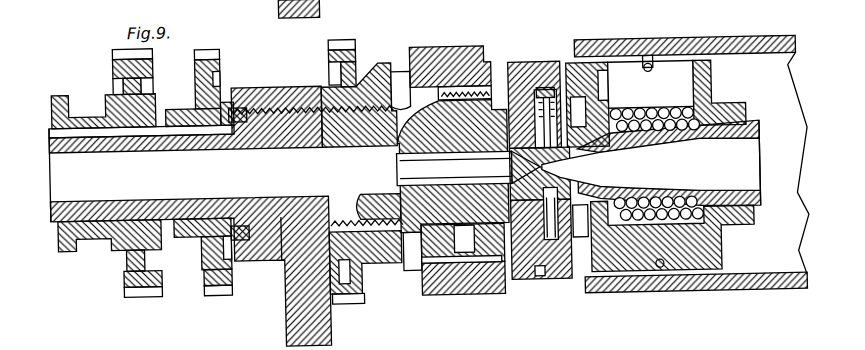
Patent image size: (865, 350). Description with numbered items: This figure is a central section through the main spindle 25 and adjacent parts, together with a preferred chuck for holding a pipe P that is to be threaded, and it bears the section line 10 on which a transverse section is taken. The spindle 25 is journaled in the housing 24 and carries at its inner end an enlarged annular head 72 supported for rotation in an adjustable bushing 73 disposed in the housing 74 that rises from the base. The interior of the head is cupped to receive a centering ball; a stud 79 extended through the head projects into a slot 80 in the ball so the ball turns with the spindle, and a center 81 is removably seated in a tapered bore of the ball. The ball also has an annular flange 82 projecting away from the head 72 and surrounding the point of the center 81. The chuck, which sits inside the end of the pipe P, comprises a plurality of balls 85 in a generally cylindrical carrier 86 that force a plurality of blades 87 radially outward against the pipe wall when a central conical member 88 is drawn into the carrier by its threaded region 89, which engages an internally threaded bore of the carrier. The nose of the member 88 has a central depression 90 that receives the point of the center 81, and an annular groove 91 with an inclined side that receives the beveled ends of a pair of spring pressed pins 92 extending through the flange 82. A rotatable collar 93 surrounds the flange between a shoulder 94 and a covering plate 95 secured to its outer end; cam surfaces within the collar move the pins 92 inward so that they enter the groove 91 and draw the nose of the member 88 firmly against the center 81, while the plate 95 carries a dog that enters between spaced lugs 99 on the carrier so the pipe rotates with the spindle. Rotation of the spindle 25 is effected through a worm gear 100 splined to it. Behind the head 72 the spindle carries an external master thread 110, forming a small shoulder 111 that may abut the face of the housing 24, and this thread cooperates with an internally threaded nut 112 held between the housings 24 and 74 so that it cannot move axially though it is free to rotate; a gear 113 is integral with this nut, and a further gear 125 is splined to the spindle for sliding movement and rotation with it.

The section line 10 is at (547, 64).
The housing 24 is at (276, 94).
The main spindle 25 is at (189, 218).
The annular head 72 is at (397, 72).
The adjustable bushing 73 is at (452, 62).
The housing 74 is at (432, 47).
The stud 79 is at (467, 266).
The slot 80 is at (433, 295).
The center 81 is at (392, 171).
The annular flange 82 is at (518, 283).
The balls 85 is at (637, 119).
The carrier 86 is at (721, 261).
The blades 87 is at (652, 77).
The conical member 88 is at (760, 183).
The threaded region 89 is at (757, 127).
The central depression 90 is at (469, 168).
The annular groove 91 is at (651, 165).
The spring pressed pins 92 is at (557, 270).
The rotatable collar 93 is at (516, 65).
The shoulder 94 is at (508, 230).
The covering plate 95 is at (565, 93).
The spaced lugs 99 is at (583, 65).
The worm gear 100 is at (115, 66).
The master thread 110 is at (358, 193).
The shoulder 111 is at (330, 113).
The nut 112 is at (378, 61).
The gear 113 is at (343, 46).
The gear 125 is at (226, 68).
The pipe P is at (690, 297).